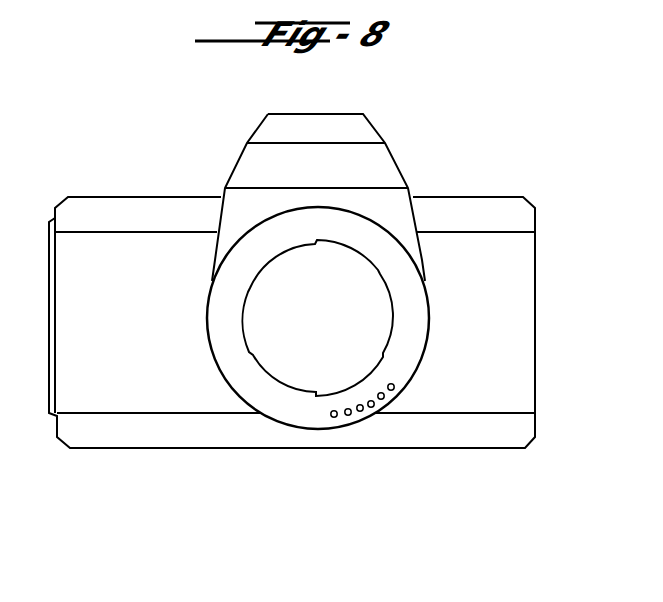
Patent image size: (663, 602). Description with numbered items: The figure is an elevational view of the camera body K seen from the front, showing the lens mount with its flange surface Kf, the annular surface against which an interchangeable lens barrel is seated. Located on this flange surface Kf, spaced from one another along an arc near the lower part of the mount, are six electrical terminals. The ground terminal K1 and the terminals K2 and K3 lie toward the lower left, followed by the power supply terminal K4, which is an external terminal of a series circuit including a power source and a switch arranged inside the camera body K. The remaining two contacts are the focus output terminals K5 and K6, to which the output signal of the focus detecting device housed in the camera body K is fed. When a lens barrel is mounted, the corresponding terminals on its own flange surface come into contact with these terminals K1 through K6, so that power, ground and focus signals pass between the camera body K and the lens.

The camera body K is at (458, 206).
The mount flange surface Kf is at (275, 406).
The ground terminal K1 is at (332, 418).
The terminal K2 is at (347, 416).
The terminal K3 is at (361, 412).
The power supply terminal K4 is at (373, 407).
The focus output terminal K5 is at (384, 398).
The focus output terminal K6 is at (394, 386).